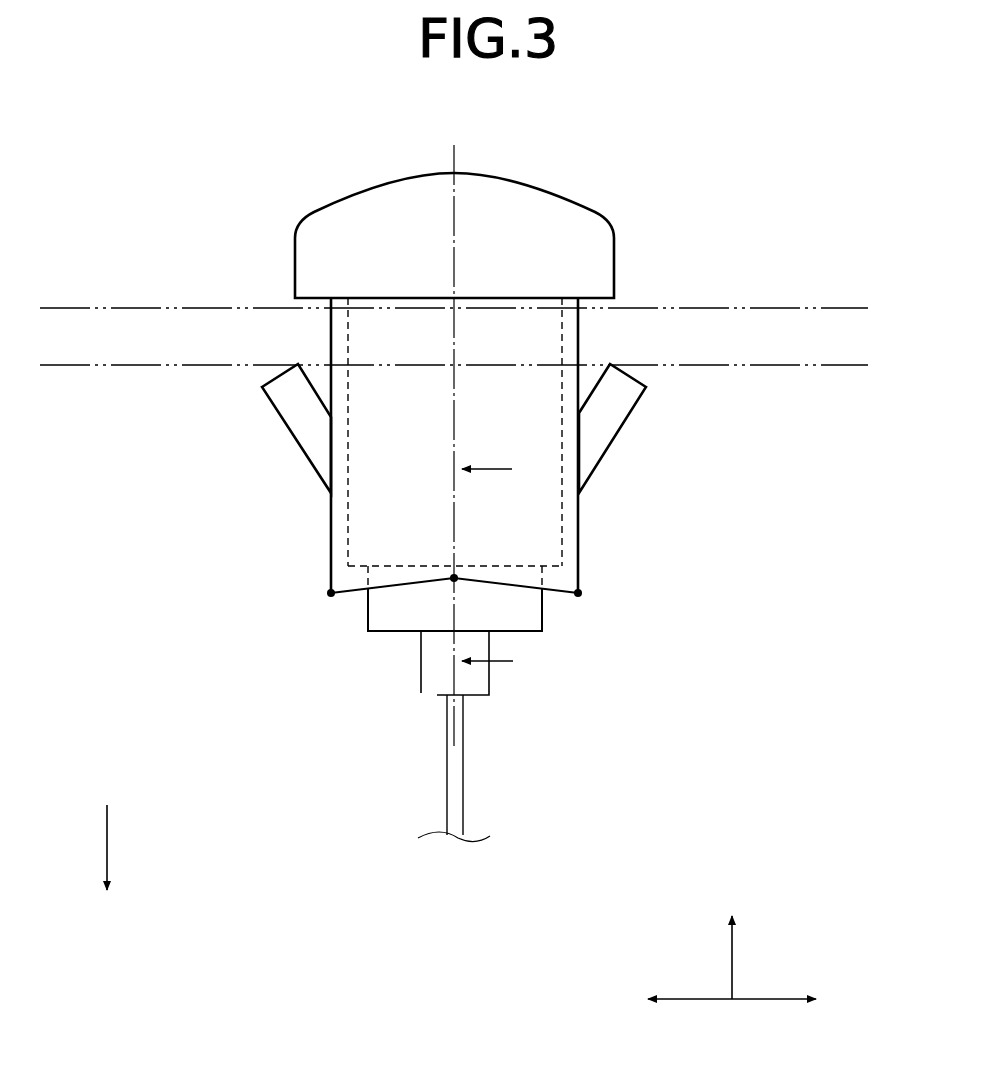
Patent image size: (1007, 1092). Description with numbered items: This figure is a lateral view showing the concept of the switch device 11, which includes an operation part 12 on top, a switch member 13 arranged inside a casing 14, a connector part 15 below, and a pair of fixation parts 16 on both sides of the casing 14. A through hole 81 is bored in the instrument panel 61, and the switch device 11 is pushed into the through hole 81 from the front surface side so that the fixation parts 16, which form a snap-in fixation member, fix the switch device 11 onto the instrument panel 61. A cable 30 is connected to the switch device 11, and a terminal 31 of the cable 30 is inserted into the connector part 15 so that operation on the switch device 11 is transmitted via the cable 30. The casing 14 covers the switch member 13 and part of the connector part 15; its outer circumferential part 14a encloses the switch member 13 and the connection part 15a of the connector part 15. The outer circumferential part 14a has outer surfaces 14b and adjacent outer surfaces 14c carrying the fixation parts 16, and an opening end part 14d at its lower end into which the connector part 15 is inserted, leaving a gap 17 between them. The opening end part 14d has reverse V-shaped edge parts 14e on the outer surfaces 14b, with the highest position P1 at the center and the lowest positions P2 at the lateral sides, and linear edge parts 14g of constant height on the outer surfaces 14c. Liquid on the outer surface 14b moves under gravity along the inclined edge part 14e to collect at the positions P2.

The switch device 11 is at (630, 126).
The operation part 12 is at (592, 265).
The switch member 13 is at (556, 505).
The casing 14 is at (388, 451).
The outer circumferential part 14a is at (179, 450).
The outer surface 14b is at (368, 480).
The outer surface 14c is at (328, 518).
The opening end part 14d is at (316, 616).
The edge part 14e is at (337, 597).
The edge part 14g is at (329, 591).
The connector part 15 is at (545, 610).
The connection part 15a is at (580, 583).
The fixation part 16 is at (288, 400).
The gap 17 is at (348, 575).
The cable 30 is at (487, 736).
The terminal 31 is at (433, 682).
The instrument panel 61 is at (742, 307).
The through hole 81 is at (578, 338).
The position P1 is at (457, 576).
The position P2 is at (320, 603).